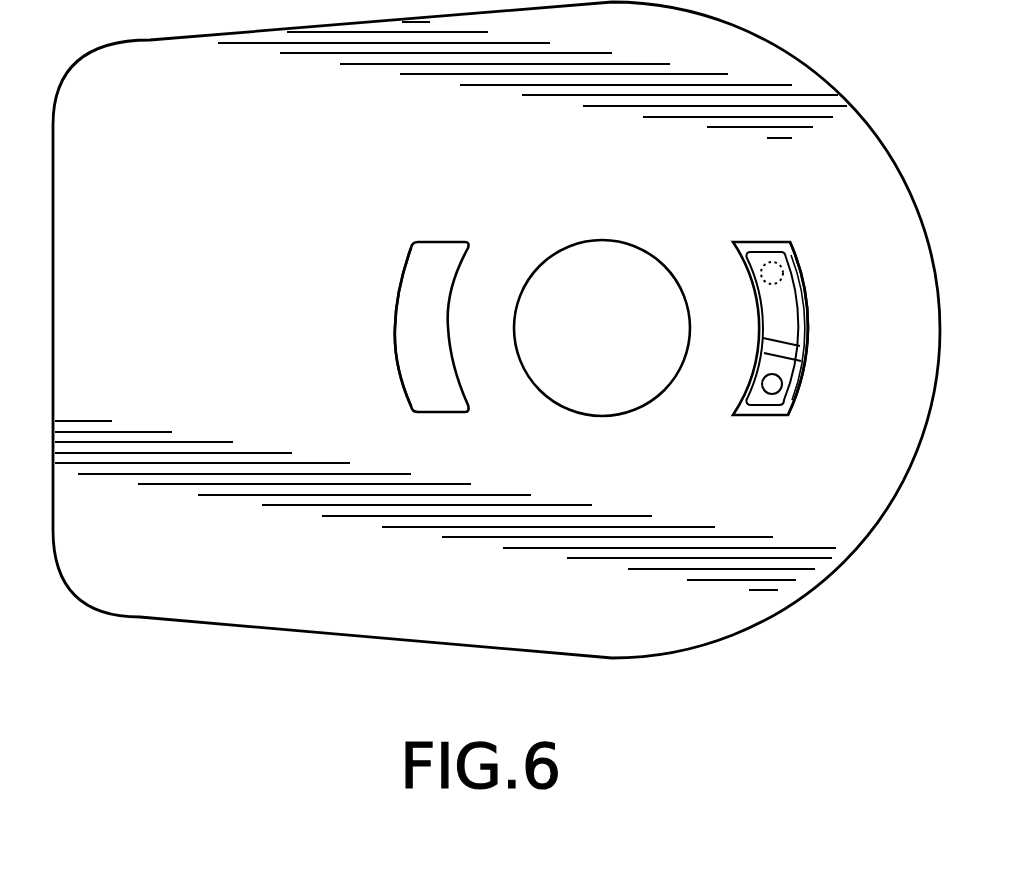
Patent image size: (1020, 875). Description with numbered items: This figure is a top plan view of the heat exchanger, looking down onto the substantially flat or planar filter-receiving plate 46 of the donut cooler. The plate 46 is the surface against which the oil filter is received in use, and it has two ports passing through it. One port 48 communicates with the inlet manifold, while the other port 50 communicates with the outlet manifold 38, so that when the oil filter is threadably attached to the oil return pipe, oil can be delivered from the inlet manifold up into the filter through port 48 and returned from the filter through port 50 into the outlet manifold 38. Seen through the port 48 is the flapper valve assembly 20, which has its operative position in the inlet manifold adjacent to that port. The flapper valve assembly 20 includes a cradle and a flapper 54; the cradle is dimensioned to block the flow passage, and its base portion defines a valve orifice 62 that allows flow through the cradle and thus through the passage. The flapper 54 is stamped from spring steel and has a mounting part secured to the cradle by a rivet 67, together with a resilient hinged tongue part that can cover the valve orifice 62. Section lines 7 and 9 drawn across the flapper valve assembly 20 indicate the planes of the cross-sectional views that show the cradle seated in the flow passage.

The filter-receiving plate 46 is at (228, 251).
The port 50 is at (430, 214).
The outlet manifold 38 is at (410, 320).
The port 48 is at (776, 294).
The flapper 54 is at (793, 318).
The valve orifice 62 is at (773, 246).
The rivet 67 is at (780, 388).
The flapper valve assembly 20 is at (814, 265).
The section line 9- 9 is at (738, 272).
The section line 7- 7 is at (772, 187).